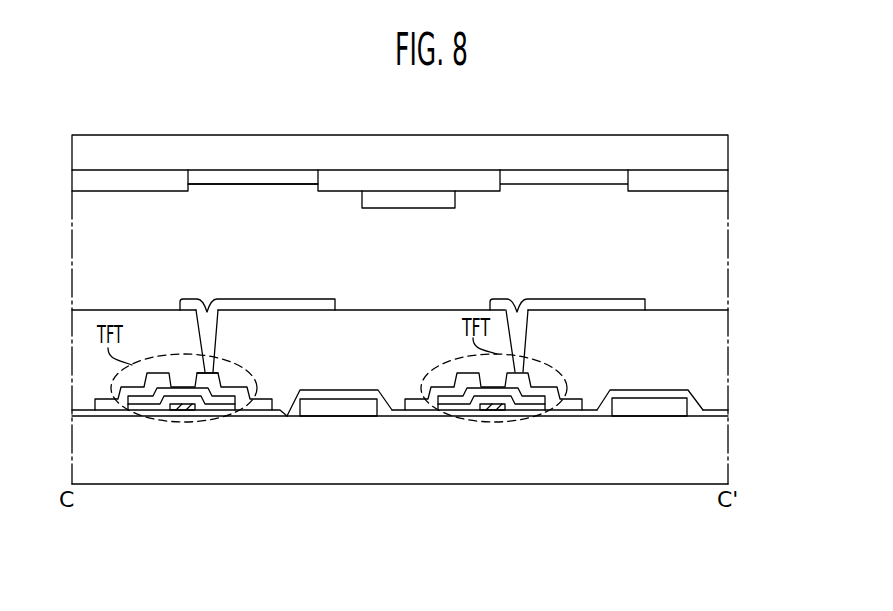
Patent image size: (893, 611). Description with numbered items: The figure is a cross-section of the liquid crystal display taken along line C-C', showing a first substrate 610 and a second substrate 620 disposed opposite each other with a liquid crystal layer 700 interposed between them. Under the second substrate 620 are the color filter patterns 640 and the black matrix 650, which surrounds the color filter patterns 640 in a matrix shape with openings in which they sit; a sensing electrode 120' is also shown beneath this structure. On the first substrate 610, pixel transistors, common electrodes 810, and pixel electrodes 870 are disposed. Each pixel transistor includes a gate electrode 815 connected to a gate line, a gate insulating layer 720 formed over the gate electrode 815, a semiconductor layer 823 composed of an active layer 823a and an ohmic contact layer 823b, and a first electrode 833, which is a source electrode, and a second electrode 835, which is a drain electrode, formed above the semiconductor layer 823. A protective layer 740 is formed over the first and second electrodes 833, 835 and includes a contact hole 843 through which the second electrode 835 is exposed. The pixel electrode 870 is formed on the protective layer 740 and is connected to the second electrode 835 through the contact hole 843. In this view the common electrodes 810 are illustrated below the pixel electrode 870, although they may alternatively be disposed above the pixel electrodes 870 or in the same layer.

The second substrate 620 is at (722, 143).
The black matrix 650 is at (722, 177).
The color filter patterns 640 is at (250, 175).
The sensing electrodes 120' is at (408, 154).
The liquid crystal layer 700 is at (720, 270).
The protective layer 740 is at (70, 330).
The pixel electrode 870 is at (313, 307).
The contact hole 843 is at (224, 338).
The first electrode 833 is at (158, 373).
The second electrode 835 is at (212, 379).
The semiconductor layer 823 is at (323, 484).
The active layer 823a is at (131, 404).
The ohmic contact layer 823b is at (152, 403).
The gate electrode 815 is at (186, 410).
The gate insulating layer 720 is at (268, 414).
The common electrodes 810 is at (320, 405).
The first substrate 610 is at (722, 450).